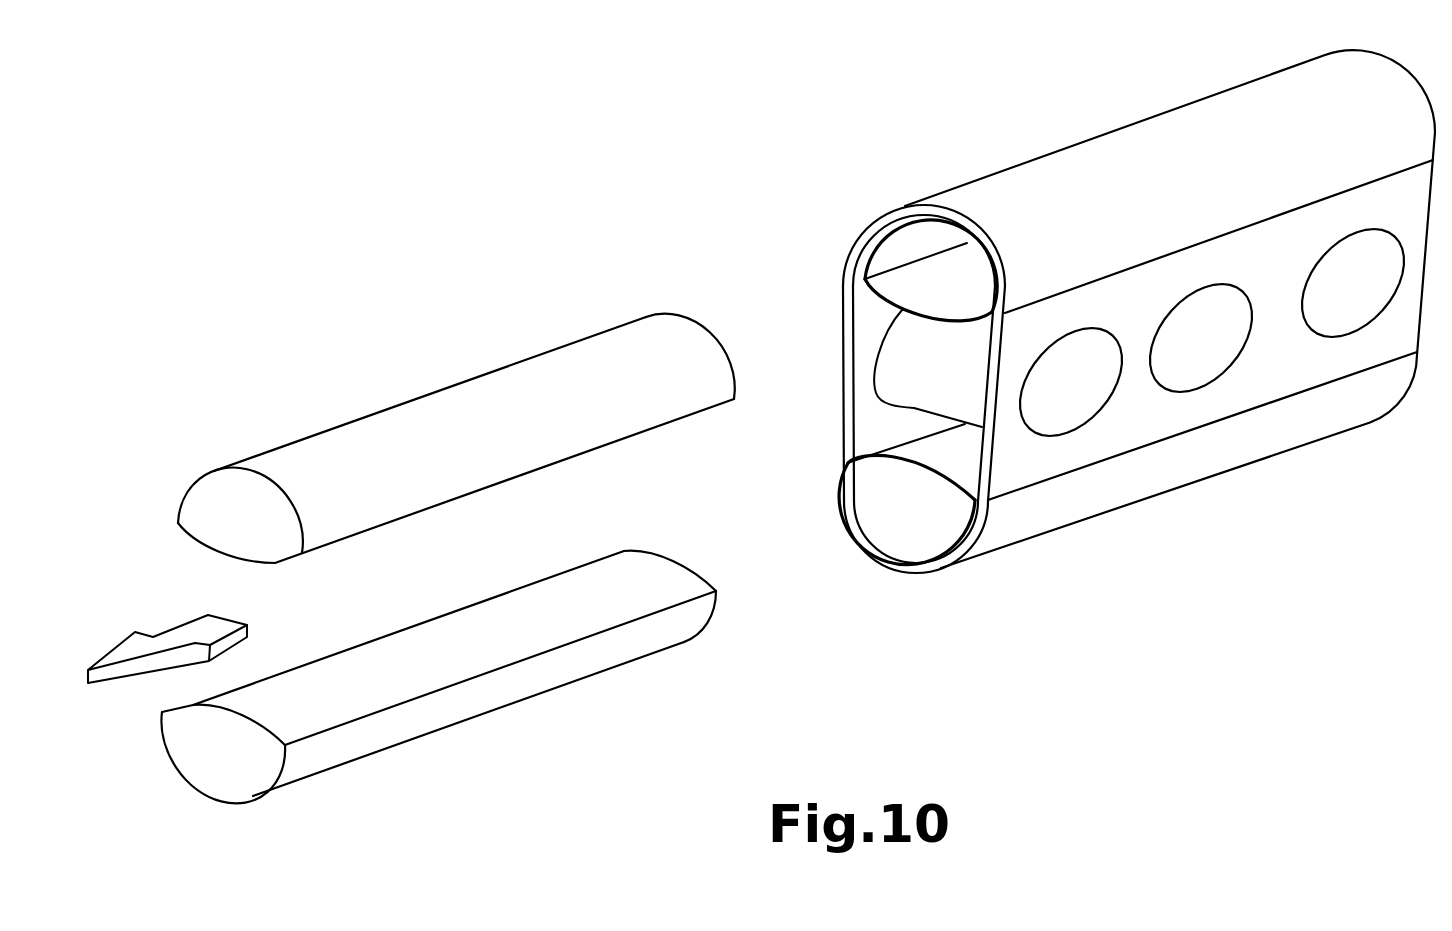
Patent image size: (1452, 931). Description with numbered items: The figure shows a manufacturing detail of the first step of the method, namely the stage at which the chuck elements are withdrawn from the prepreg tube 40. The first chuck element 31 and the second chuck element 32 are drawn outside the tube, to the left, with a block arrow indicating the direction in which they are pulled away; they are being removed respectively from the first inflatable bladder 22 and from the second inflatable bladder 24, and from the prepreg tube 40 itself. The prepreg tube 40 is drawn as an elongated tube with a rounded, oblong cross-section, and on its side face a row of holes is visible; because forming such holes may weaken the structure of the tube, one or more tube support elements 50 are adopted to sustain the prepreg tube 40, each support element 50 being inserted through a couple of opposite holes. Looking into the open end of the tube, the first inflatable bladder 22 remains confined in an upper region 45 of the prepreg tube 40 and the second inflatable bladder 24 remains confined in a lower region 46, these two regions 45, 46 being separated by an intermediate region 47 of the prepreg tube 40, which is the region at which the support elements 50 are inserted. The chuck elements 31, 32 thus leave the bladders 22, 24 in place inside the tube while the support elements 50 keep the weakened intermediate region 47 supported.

The first inflatable bladder 22 is at (886, 254).
The second inflatable bladder 24 is at (913, 524).
The first chuck element 31 is at (372, 458).
The second chuck element 32 is at (483, 628).
The prepreg tube 40 is at (852, 282).
The region of the prepreg tube 45 is at (871, 291).
The region of the prepreg tube 46 is at (859, 458).
The intermediate region of the prepreg tube 47 is at (866, 425).
The tube support element 50 is at (900, 371).